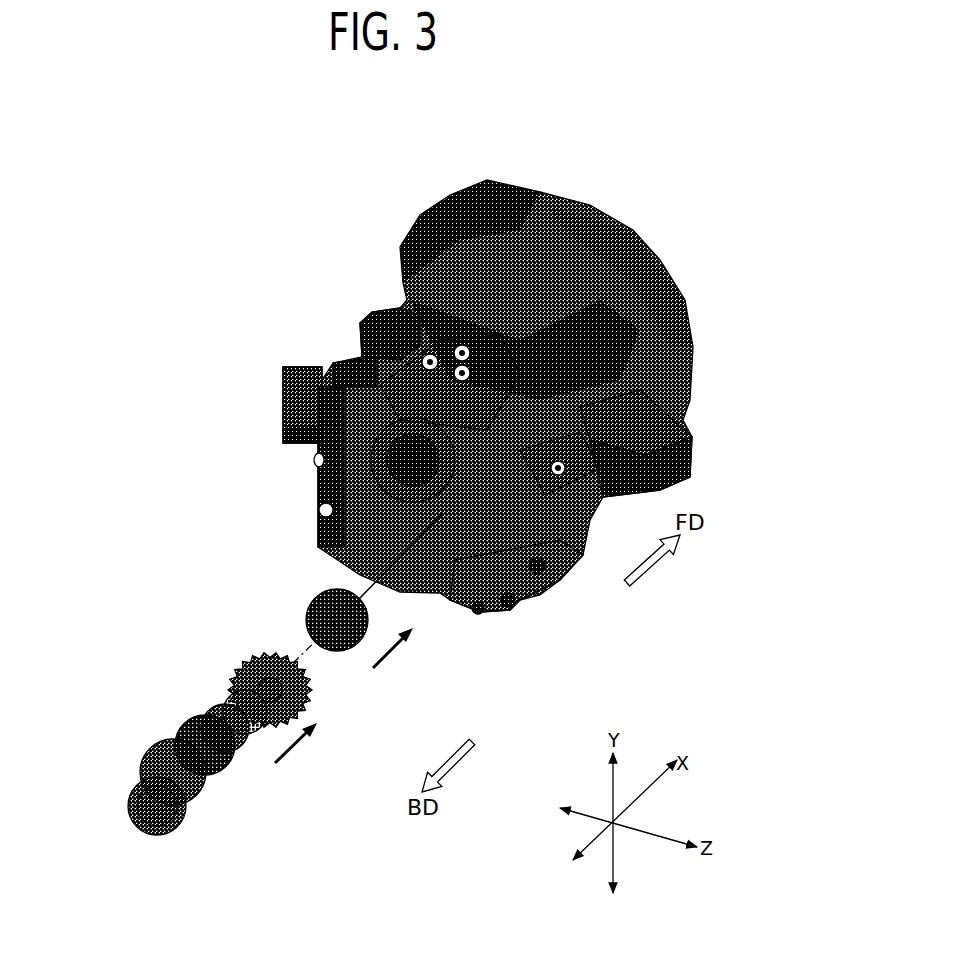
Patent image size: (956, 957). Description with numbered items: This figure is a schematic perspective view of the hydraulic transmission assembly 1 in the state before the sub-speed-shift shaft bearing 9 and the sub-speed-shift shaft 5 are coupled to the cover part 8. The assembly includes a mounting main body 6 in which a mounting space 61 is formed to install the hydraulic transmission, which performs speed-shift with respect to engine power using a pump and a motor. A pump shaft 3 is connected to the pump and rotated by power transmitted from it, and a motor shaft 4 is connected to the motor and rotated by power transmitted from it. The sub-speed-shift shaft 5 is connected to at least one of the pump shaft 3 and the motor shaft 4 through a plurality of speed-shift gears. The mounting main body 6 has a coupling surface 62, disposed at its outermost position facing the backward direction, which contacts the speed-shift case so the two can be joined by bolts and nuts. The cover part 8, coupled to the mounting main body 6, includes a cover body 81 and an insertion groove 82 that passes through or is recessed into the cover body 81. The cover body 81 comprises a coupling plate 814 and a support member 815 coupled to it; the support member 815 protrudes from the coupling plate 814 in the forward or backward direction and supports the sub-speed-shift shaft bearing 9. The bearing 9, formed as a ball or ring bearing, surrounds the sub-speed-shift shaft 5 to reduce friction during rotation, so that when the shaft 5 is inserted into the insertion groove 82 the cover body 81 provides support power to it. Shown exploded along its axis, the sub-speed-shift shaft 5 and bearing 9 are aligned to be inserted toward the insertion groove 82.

The hydraulic transmission assembly 1 is at (700, 203).
The pump shaft 3 is at (312, 463).
The motor shaft 4 is at (323, 510).
The sub-speed-shift shaft 5 is at (238, 697).
The mounting main body 6 is at (380, 310).
The mounting space 61 is at (348, 412).
The coupling surface 62 is at (333, 387).
The cover part 8 is at (653, 632).
The cover body 81 is at (593, 633).
The coupling plate 814 is at (480, 610).
The support member 815 is at (510, 602).
The insertion groove 82 is at (537, 570).
The sub-speed-shift shaft bearing 9 is at (308, 603).